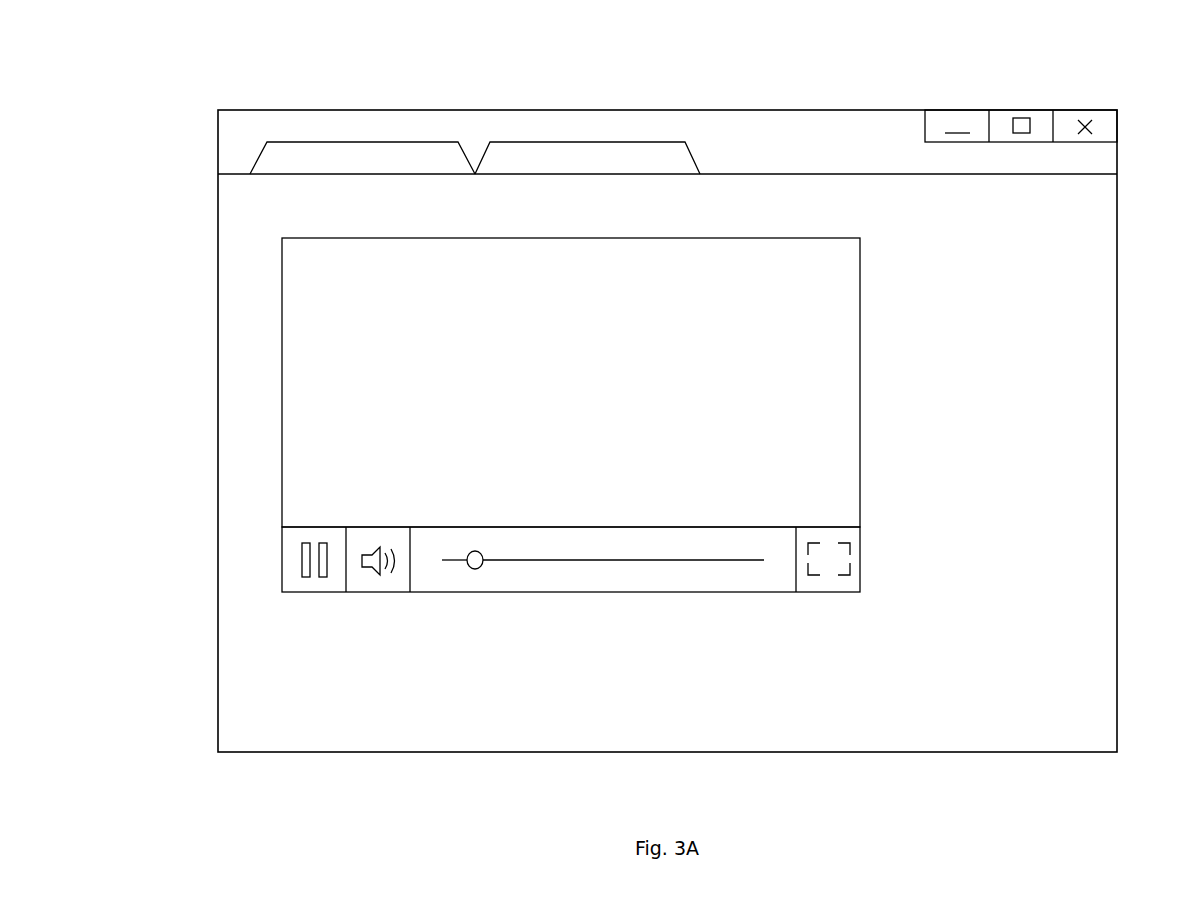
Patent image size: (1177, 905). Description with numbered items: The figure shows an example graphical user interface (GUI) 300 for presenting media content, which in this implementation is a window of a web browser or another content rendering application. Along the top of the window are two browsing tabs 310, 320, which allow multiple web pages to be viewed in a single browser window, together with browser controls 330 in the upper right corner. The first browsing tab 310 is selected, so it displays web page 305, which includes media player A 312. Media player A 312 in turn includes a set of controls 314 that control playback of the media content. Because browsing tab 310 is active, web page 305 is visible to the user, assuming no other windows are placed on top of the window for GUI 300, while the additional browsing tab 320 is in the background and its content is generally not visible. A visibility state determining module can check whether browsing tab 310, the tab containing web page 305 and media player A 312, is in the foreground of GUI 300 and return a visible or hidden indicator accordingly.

The graphical user interface 300 is at (180, 54).
The web page 305 is at (986, 238).
The browsing tab 310 is at (348, 128).
The media player A 312 is at (571, 382).
The controls 314 is at (607, 607).
The browsing tab 320 is at (573, 130).
The browser controls 330 is at (1025, 96).